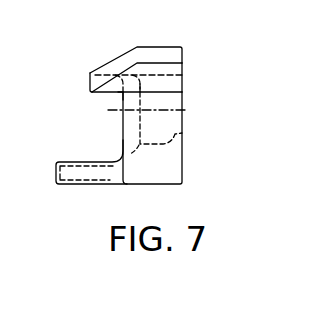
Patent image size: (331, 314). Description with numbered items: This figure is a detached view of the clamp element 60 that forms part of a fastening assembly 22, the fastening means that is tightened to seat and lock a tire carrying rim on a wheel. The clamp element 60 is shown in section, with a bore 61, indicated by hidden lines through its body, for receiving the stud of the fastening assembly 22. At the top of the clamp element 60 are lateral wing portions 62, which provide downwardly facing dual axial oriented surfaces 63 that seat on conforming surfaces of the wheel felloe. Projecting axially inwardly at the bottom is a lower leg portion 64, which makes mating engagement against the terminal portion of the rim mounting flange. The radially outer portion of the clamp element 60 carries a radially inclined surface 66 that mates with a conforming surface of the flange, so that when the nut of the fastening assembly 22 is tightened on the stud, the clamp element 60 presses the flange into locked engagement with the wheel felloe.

The fastening assembly 22 is at (197, 182).
The clamp element 60 is at (181, 152).
The bore 61 is at (182, 133).
The lateral wing portions 62 is at (170, 88).
The dual axial oriented surfaces 63 is at (105, 93).
The lower leg portion 64 is at (80, 177).
The radially inclined surface 66 is at (110, 65).